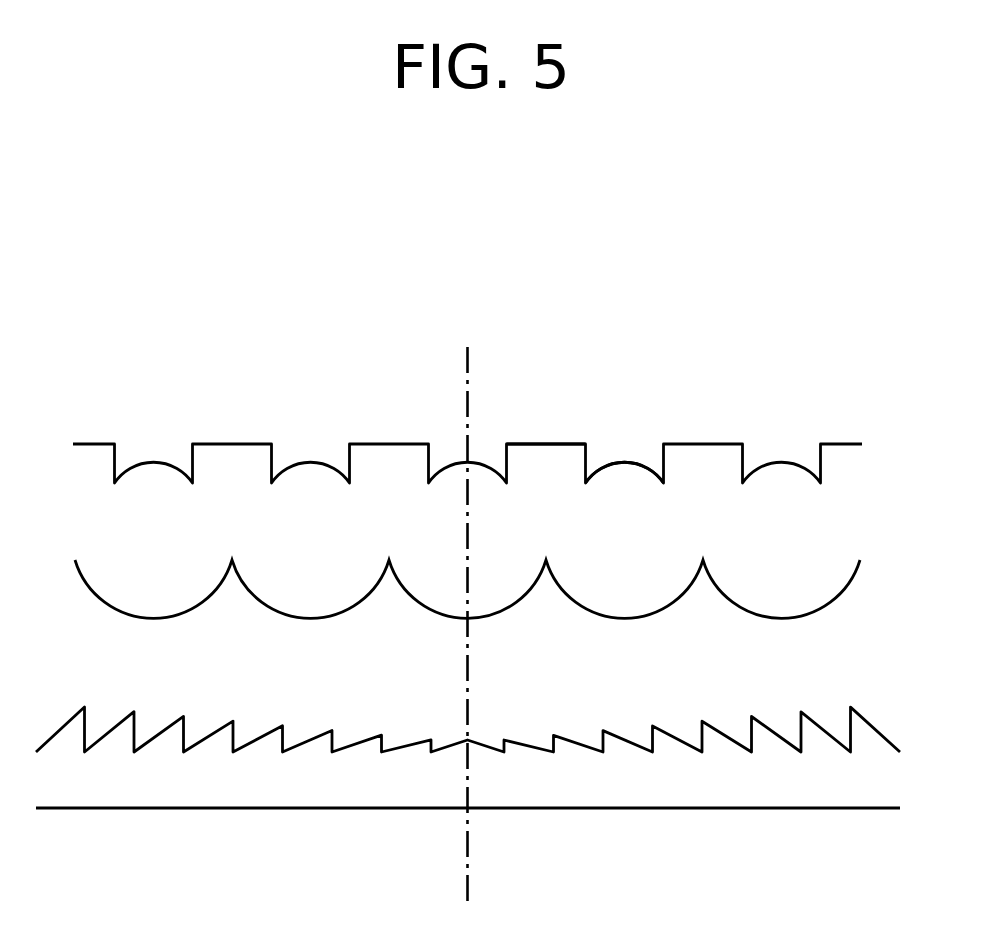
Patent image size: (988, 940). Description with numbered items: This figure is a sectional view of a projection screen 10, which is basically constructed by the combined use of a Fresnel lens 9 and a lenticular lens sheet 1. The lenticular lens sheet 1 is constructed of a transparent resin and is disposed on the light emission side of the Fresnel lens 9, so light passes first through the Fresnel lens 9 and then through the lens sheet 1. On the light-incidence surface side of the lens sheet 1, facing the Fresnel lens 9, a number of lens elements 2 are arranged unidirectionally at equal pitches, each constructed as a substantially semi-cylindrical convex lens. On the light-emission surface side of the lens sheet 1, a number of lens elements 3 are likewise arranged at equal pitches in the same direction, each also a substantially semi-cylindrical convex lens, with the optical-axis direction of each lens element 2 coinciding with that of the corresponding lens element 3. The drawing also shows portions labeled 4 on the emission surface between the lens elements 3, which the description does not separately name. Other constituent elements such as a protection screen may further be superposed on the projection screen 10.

The projection screen 10 is at (181, 381).
The lenticular lens sheet 1 is at (697, 444).
The flat portion 4 is at (524, 444).
The lens element 3 is at (606, 463).
The lens element 2 is at (620, 618).
The Fresnel lens 9 is at (628, 790).